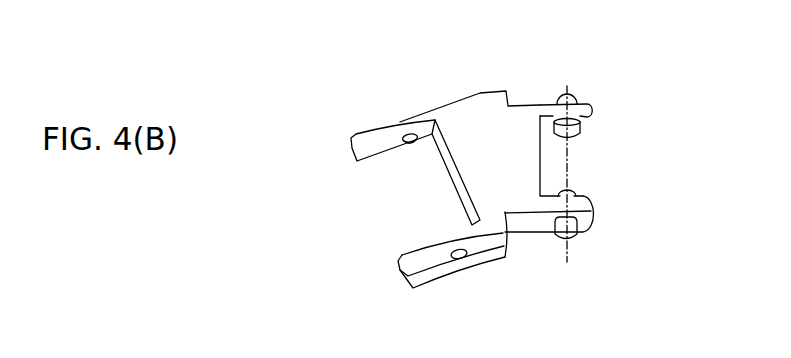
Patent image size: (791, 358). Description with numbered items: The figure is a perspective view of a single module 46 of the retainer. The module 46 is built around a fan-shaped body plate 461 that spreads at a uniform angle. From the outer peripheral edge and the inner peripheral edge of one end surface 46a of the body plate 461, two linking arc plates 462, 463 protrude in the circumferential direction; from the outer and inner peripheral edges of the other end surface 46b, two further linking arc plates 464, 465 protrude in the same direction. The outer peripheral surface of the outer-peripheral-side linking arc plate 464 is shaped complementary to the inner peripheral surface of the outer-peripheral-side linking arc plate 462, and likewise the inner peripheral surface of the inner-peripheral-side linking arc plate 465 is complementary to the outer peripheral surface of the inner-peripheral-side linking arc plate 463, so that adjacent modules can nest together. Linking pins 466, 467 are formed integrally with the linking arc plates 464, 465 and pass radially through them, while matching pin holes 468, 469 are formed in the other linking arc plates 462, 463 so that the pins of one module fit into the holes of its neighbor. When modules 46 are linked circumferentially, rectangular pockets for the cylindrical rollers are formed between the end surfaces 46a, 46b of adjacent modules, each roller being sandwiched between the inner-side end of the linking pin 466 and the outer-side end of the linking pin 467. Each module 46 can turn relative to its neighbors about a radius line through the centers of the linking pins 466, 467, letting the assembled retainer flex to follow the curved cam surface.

The module 46 is at (348, 98).
The body plate 461 is at (481, 95).
The linking arc plate 462 is at (412, 119).
The linking arc plate 463 is at (434, 270).
The linking arc plate 464 is at (542, 104).
The linking arc plate 465 is at (537, 222).
The linking pin 466 is at (578, 96).
The linking pin 467 is at (574, 241).
The pin hole 468 is at (407, 144).
The pin hole 469 is at (460, 259).
The end surface 46a is at (450, 172).
The end surface 46b is at (540, 166).